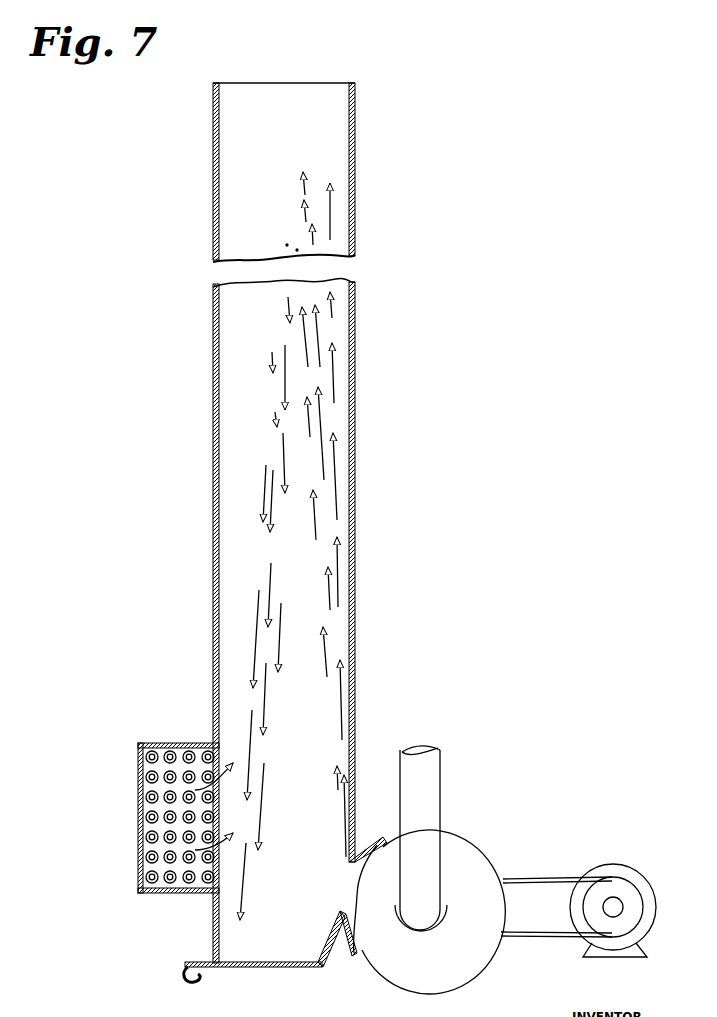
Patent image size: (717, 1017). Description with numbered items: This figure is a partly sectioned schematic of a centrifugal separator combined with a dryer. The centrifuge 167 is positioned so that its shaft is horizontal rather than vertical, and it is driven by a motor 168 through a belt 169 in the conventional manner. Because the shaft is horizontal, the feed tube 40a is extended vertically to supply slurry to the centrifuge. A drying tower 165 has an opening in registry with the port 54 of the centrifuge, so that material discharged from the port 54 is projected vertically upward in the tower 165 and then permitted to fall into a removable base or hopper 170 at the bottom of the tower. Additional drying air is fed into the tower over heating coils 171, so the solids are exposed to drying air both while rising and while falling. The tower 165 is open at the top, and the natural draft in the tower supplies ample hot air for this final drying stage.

The drying tower 165 is at (342, 402).
The heating coils 171 is at (138, 780).
The removable base or hopper 170 is at (270, 968).
The port 54 is at (345, 905).
The feed tube 40a is at (433, 804).
The centrifuge 167 is at (478, 957).
The belt 169 is at (543, 880).
The motor 168 is at (638, 873).